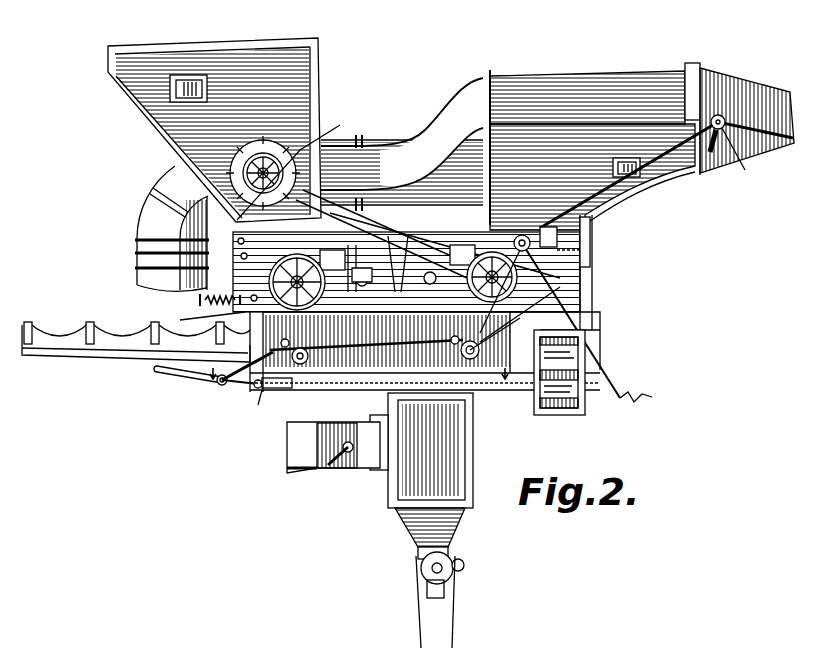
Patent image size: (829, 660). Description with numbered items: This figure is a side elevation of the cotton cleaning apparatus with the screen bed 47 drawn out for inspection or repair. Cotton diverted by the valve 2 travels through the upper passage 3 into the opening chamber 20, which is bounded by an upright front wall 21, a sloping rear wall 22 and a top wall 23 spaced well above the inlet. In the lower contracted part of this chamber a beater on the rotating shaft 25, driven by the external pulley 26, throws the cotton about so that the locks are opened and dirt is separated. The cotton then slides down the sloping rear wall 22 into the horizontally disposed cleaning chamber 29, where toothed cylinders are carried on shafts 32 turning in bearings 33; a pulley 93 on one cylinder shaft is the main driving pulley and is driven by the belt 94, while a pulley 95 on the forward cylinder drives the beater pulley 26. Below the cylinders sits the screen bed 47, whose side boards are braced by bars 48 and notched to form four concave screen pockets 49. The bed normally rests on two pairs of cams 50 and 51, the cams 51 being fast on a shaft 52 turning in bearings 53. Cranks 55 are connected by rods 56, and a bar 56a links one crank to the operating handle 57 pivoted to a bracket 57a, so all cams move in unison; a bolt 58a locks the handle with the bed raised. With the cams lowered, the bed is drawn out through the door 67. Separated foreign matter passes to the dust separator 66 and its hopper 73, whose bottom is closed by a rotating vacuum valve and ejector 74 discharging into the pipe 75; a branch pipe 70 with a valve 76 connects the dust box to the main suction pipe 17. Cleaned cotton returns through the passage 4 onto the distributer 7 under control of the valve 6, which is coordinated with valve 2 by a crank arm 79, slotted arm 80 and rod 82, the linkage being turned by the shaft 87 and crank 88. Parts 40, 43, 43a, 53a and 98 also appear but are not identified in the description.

The valve 2 is at (760, 118).
The upper passage 3 is at (662, 73).
The passage 4 is at (703, 176).
The valve 6 is at (598, 252).
The distributer 7 is at (578, 390).
The main suction pipe 17 is at (138, 268).
The opening chamber 20 is at (313, 62).
The upright front wall 21 is at (321, 98).
The sloping rear wall 22 is at (160, 128).
The top wall 23 is at (238, 42).
The rotating shaft 25 is at (172, 228).
The external pulley 26 is at (291, 165).
The cleaning chamber 29 is at (395, 222).
The shaft 32 is at (400, 288).
The bearings 33 is at (358, 286).
The frame plate 40 is at (243, 270).
The spring 43 is at (200, 300).
The spring lever 43a is at (202, 311).
The screen bed 47 is at (118, 352).
The bars 48 is at (112, 340).
The concave screen pockets 49 is at (58, 340).
The cams 50 is at (262, 392).
The cams 51 is at (450, 362).
The shaft 52 is at (480, 385).
The bearings 53 is at (500, 336).
The link arm 53a is at (490, 338).
The crank 55 is at (288, 392).
The rod 56 is at (315, 390).
The bar 56a is at (221, 386).
The operating handle 57 is at (190, 392).
The bracket 57a is at (270, 413).
The bolt 58a is at (225, 366).
The dust separator 66 is at (460, 470).
The door 67 is at (200, 330).
The branch pipe 70 is at (300, 476).
The hopper 73 is at (470, 526).
The rotating vacuum valve and ejector 74 is at (455, 574).
The discharge pipe 75 is at (432, 600).
The valve 76 is at (355, 470).
The crank arm 79 is at (737, 157).
The slotted arm 80 is at (722, 135).
The rod 82 is at (660, 165).
The shaft 87 is at (618, 372).
The crank 88 is at (647, 392).
The pulley 93 is at (268, 284).
The belt 94 is at (340, 368).
The pulley 95 is at (594, 280).
The drive belt 98 is at (412, 222).